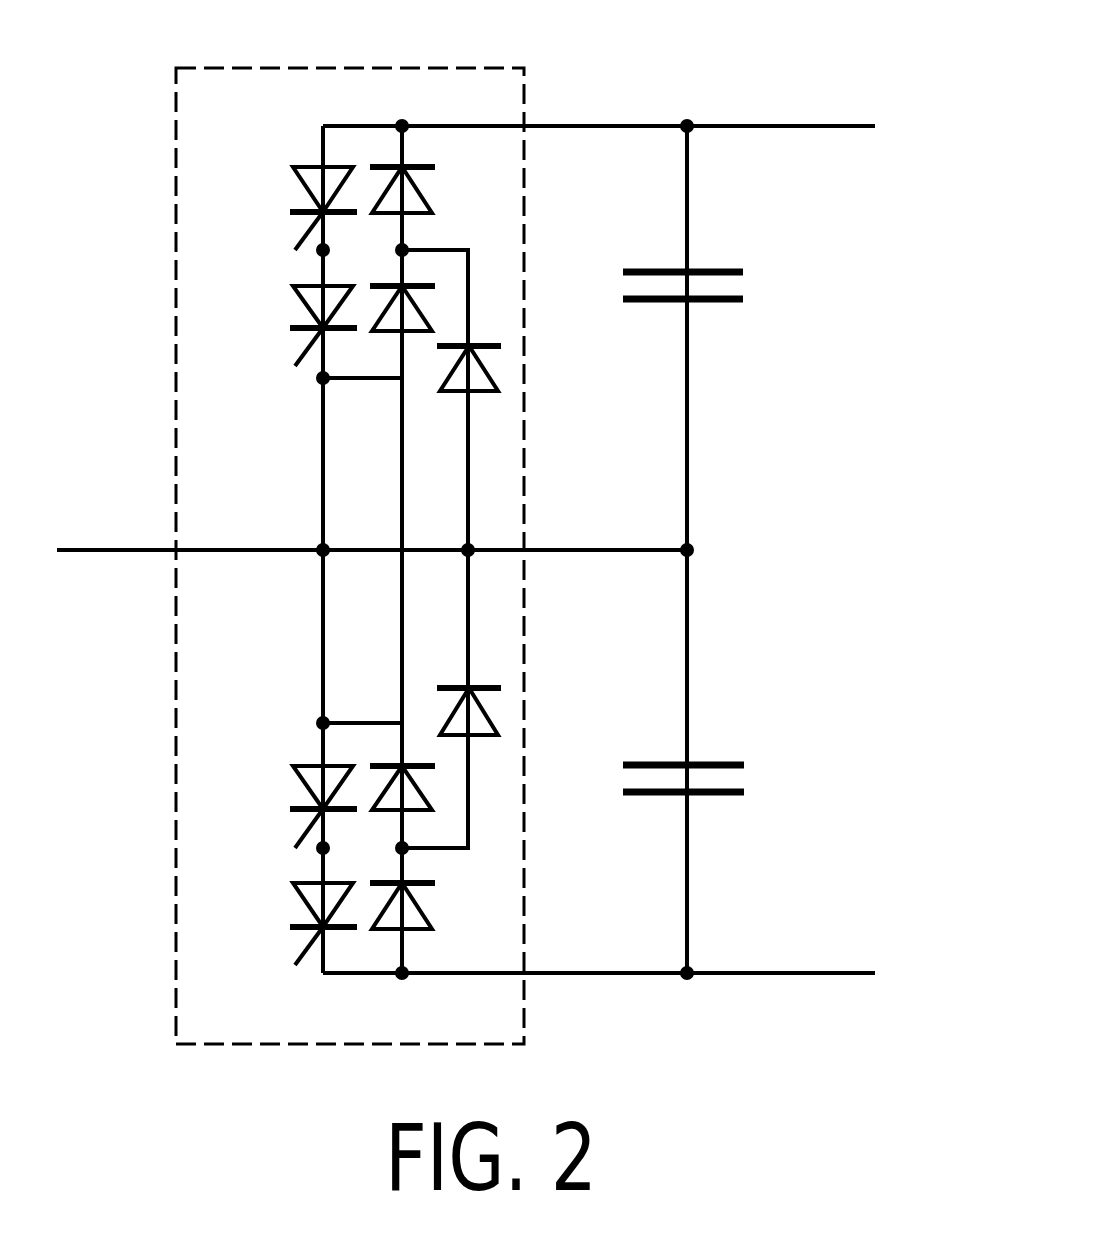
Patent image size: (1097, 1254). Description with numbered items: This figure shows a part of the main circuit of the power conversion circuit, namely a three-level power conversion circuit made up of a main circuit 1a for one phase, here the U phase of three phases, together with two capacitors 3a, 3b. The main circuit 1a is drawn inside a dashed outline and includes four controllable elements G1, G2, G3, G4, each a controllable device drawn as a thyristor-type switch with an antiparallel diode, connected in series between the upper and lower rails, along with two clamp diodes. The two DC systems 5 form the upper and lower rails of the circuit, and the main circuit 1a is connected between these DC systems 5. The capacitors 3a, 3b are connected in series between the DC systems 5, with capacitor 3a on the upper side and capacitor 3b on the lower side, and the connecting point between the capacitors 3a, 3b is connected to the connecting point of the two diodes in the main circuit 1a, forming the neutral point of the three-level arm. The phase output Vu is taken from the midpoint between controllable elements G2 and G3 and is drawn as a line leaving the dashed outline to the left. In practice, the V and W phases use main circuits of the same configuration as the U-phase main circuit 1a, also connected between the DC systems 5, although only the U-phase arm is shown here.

The main circuit 1a is at (524, 93).
The capacitor 3a is at (739, 268).
The capacitor 3b is at (740, 762).
The DC system 5 is at (848, 122).
The controllable element G1 is at (310, 220).
The controllable element G2 is at (310, 333).
The controllable element G3 is at (307, 817).
The controllable element G4 is at (307, 935).
The U-phase output voltage Vu is at (190, 517).